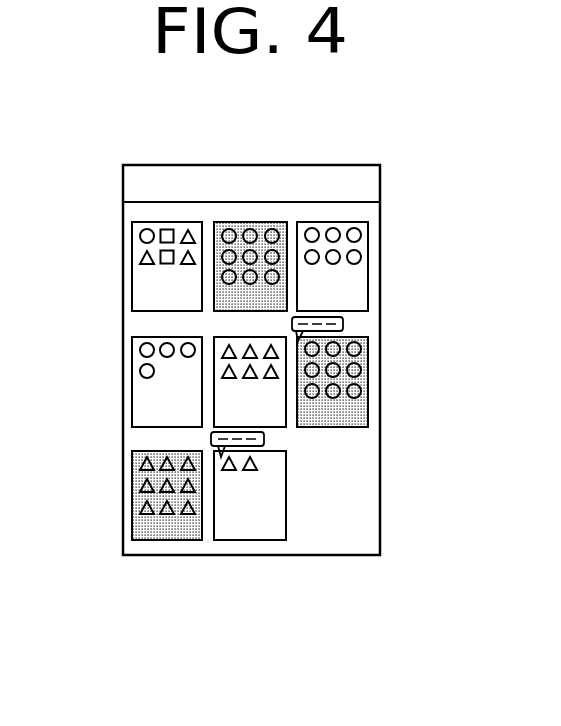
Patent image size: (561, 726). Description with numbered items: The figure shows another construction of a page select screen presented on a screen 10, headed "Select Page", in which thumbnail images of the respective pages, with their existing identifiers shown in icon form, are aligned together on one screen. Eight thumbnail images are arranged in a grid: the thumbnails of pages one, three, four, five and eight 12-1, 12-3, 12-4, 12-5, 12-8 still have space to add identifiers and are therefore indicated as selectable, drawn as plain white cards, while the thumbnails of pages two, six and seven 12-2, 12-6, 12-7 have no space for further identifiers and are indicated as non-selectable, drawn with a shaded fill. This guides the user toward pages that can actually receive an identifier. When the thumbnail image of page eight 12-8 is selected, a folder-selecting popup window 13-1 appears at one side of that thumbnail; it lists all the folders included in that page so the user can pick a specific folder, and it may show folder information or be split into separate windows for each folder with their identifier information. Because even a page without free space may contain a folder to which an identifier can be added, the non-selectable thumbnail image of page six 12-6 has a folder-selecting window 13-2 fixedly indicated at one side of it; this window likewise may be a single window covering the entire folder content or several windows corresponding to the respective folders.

The screen 10 is at (342, 165).
The thumbnail image of page 1 12-1 is at (132, 288).
The thumbnail image of page 2 12-2 is at (262, 222).
The thumbnail image of page 3 12-3 is at (368, 234).
The thumbnail image of page 4 12-4 is at (132, 411).
The thumbnail image of page 5 12-5 is at (214, 337).
The thumbnail image of page 6 12-6 is at (368, 342).
The thumbnail image of page 7 12-7 is at (132, 510).
The thumbnail image of page 8 12-8 is at (245, 540).
The folder-selecting popup window 13-1 is at (264, 437).
The folder-selecting window 13-2 is at (343, 325).